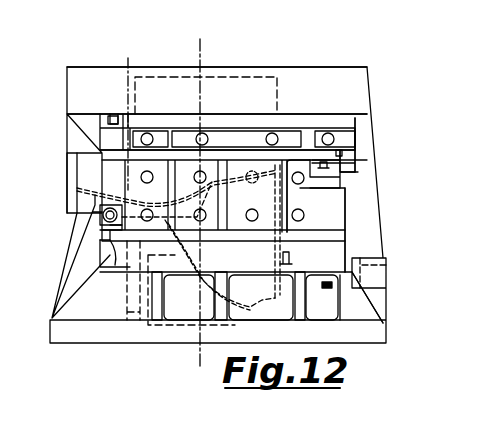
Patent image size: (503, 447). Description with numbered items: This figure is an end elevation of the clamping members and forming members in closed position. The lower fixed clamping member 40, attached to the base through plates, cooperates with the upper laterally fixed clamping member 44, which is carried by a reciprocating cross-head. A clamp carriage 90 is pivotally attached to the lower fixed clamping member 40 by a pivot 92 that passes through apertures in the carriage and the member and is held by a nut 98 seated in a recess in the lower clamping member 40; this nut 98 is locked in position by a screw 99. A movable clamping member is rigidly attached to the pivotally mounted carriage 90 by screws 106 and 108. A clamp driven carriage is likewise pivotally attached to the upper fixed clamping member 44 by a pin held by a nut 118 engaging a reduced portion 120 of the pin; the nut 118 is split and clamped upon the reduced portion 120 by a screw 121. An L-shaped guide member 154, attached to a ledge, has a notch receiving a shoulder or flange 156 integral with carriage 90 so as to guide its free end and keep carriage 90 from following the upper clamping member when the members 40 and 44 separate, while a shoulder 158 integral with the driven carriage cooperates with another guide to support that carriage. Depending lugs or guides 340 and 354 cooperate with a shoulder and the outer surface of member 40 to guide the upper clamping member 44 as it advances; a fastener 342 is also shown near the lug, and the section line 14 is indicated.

The section line 14- 14 is at (143, 368).
The upper laterally fixed clamping member 44 is at (80, 98).
The shoulder 158 is at (118, 113).
The L-shaped guide member 154 is at (110, 228).
The screw 106 is at (141, 175).
The depending lug or guide 340 is at (77, 194).
The fastener 342 is at (100, 217).
The screw 108 is at (112, 232).
The lower fixed clamping member 40 is at (103, 257).
The shoulder or flange 156 is at (114, 266).
The screw 121 is at (340, 153).
The nut 118 is at (343, 161).
The reduced portion 120 is at (324, 176).
The depending lug or guide 354 is at (357, 168).
The pivot 92 is at (345, 192).
The clamp carriage 90 is at (317, 212).
The nut 98 is at (322, 297).
The screw 99 is at (361, 297).